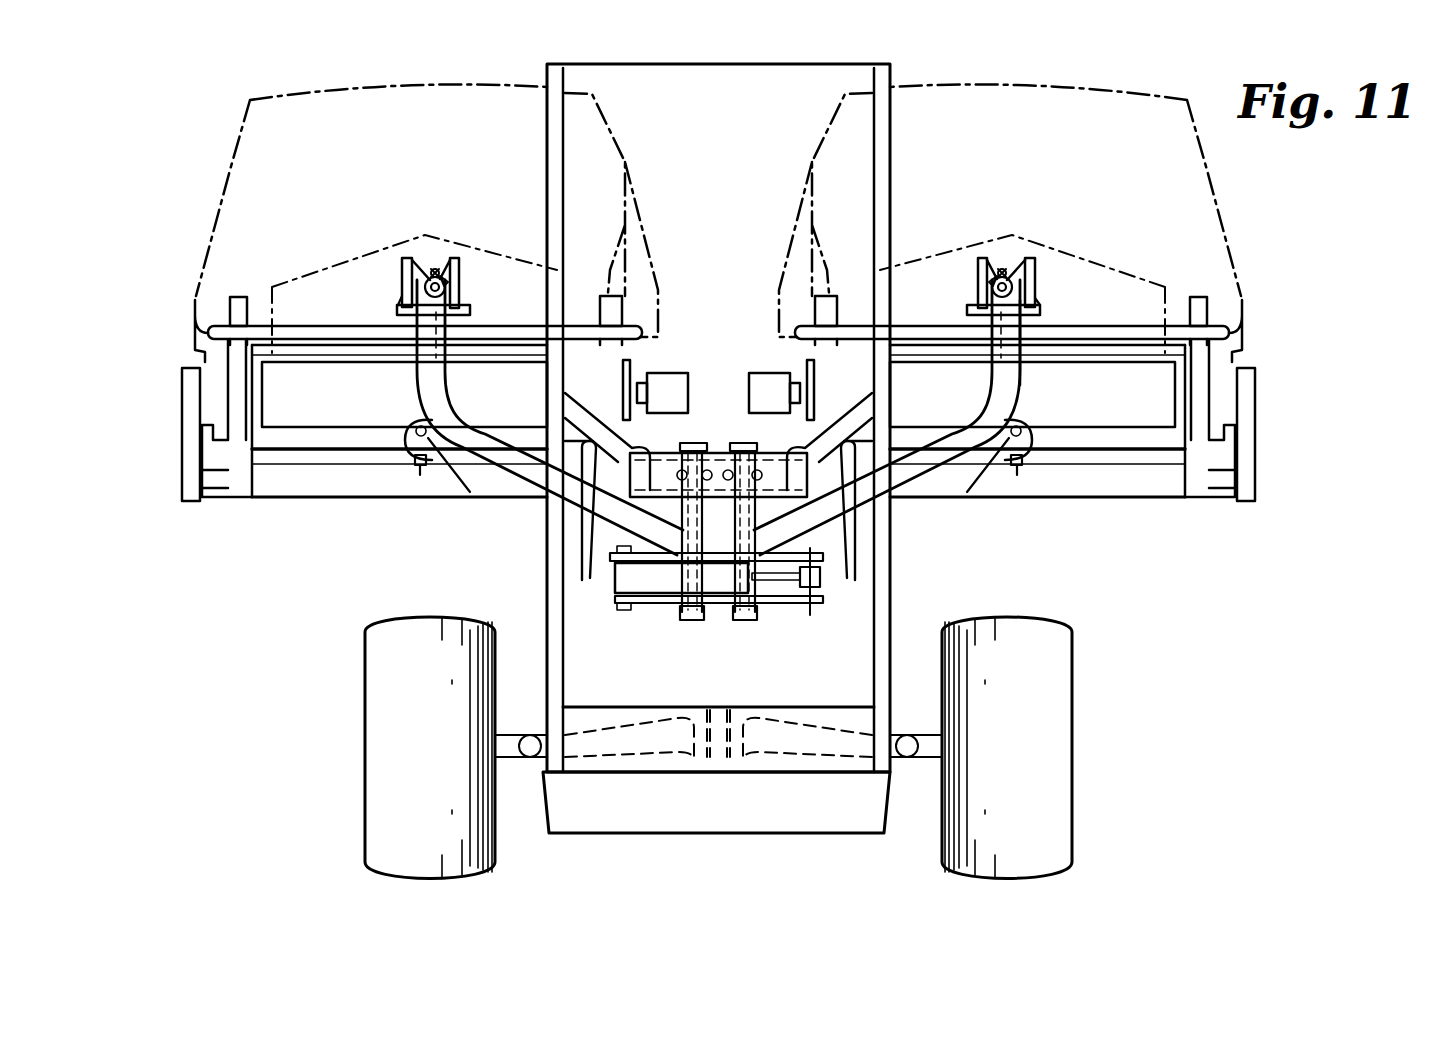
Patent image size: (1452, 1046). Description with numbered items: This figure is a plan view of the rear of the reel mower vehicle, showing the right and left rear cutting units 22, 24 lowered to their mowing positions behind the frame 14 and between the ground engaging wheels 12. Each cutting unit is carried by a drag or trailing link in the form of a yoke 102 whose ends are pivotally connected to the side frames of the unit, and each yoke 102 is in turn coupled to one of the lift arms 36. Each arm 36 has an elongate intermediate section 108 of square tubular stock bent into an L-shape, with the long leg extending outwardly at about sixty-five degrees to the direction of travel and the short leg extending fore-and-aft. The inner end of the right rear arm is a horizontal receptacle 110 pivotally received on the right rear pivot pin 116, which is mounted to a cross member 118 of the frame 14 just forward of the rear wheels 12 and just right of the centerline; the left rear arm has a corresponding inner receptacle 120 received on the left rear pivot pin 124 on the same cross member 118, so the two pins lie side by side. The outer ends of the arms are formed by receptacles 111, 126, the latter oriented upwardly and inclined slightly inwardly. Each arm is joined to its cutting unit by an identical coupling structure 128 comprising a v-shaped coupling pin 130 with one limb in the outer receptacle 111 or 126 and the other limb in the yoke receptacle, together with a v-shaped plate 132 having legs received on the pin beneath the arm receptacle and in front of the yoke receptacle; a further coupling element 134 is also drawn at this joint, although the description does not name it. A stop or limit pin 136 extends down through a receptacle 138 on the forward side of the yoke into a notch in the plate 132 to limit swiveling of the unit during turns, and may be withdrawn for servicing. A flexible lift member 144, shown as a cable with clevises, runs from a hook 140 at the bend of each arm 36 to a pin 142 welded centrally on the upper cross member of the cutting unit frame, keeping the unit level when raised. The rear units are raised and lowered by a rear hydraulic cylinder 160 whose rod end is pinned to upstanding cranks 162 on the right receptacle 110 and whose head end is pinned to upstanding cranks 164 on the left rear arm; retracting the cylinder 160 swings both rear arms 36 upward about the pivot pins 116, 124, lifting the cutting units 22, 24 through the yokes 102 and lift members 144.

The ground engaging wheels 12 is at (365, 692).
The frame 14 is at (552, 131).
The right rear cutting unit 22 is at (1018, 508).
The left rear cutting unit 24 is at (311, 522).
The lift arms 36 is at (460, 393).
The yoke 102 is at (210, 326).
The elongate intermediate section 108 is at (966, 432).
The inner receptacle 110 is at (775, 606).
The outer receptacle 111 is at (1034, 298).
The right rear pivot pin 116 is at (740, 440).
The cross member 118 is at (722, 450).
The inner receptacle 120 is at (712, 604).
The left rear pivot pin 124 is at (706, 440).
The outer receptacle 126 is at (400, 298).
The coupling structure 128 is at (472, 293).
The v-shaped coupling pin 130 is at (447, 283).
The v-shaped plate 132 is at (397, 308).
The side plate 134 is at (420, 256).
The pin 136 is at (437, 270).
The receptacle 138 is at (440, 276).
The hook 140 is at (432, 442).
The pin 142 is at (420, 470).
The flexible lift member 144 is at (410, 428).
The rear hydraulic cylinder 160 is at (650, 595).
The upstanding cranks 162 is at (828, 600).
The upstanding cranks 164 is at (612, 568).